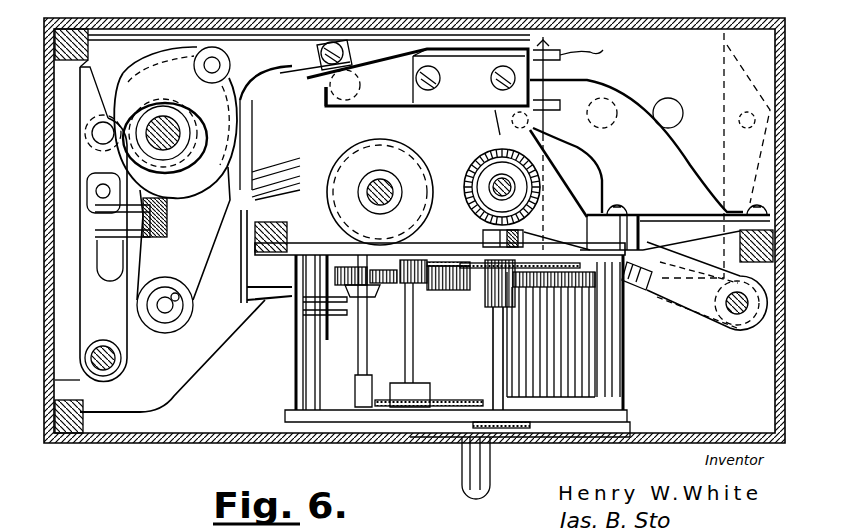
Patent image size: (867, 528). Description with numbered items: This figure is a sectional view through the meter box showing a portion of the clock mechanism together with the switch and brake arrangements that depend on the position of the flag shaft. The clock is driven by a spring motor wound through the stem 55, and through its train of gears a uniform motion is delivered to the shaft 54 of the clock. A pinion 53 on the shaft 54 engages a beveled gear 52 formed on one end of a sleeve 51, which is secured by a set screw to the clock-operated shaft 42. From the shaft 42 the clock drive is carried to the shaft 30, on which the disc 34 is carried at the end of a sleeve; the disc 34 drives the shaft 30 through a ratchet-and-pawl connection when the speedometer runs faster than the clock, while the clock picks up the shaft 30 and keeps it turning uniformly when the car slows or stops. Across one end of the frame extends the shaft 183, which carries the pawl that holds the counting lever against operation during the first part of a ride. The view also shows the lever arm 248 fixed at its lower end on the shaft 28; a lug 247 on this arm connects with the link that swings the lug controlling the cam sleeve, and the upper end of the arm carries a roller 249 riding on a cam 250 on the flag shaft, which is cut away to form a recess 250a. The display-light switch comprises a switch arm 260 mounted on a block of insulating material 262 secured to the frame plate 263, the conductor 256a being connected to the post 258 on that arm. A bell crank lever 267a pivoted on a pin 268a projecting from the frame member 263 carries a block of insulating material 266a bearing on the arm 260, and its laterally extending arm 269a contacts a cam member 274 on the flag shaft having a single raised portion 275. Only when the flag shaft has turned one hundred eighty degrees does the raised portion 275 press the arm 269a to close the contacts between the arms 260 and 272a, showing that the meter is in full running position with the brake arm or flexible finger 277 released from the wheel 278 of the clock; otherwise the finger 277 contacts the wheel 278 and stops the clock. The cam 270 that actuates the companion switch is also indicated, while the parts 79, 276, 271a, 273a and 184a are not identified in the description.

The frame plate 263 is at (690, 36).
The block of insulating material 266a is at (385, 35).
The pin 268a is at (213, 65).
The laterally extending arm 269a is at (178, 60).
The roller 249 is at (104, 108).
The recess 250a is at (92, 126).
The lever arm 248 is at (86, 172).
The shaft 28 is at (116, 362).
The lug 247 is at (92, 250).
The cam member 274 is at (158, 172).
The roller 79 is at (180, 120).
The cam 270 is at (232, 178).
The brake arm or flexible finger 277 is at (230, 265).
The cam 250 is at (235, 215).
The wheel of the clock 278 is at (268, 304).
The raised portion 275 is at (240, 136).
The bar 276 is at (246, 163).
The bell crank lever 267a is at (300, 40).
The switch arm 260 is at (449, 54).
The block of insulating material 262 is at (446, 98).
The arm 272a is at (396, 108).
The leg 271a is at (322, 108).
The conductor 256a is at (600, 52).
The disc 34 is at (405, 152).
The shaft 30 is at (394, 186).
The beveled gear 52 is at (488, 158).
The sleeve 51 is at (478, 178).
The clock operated shaft 42 is at (510, 186).
The pinion 53 is at (484, 232).
The post 258 is at (560, 64).
The lug 273a is at (588, 145).
The arm 184a is at (660, 296).
The shaft 183 is at (730, 312).
The shaft of the clock 54 is at (492, 338).
The stem 55 is at (485, 465).